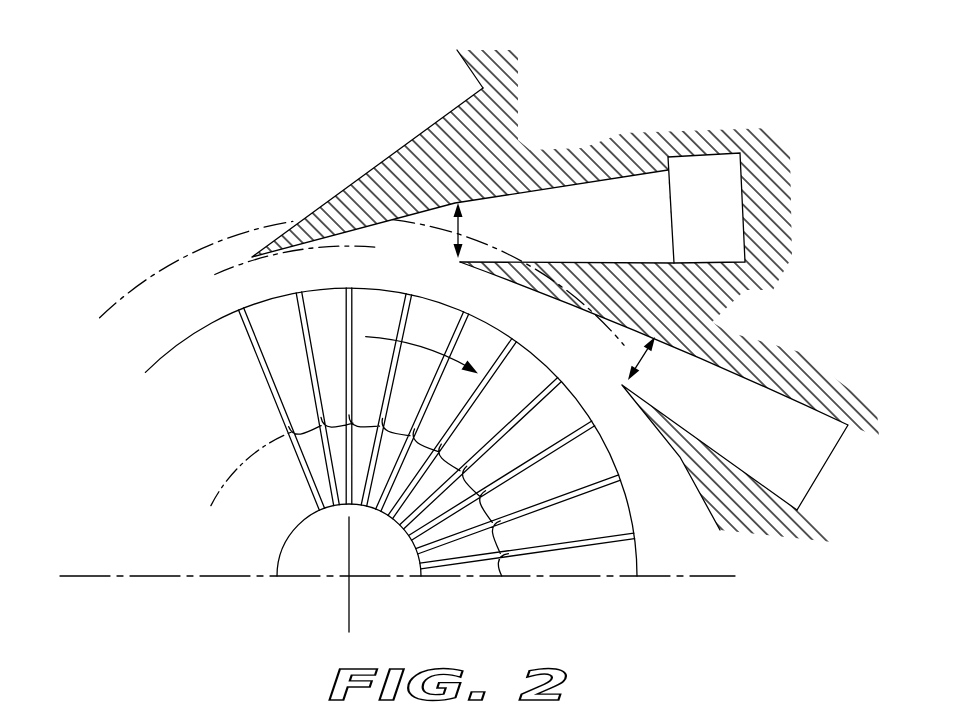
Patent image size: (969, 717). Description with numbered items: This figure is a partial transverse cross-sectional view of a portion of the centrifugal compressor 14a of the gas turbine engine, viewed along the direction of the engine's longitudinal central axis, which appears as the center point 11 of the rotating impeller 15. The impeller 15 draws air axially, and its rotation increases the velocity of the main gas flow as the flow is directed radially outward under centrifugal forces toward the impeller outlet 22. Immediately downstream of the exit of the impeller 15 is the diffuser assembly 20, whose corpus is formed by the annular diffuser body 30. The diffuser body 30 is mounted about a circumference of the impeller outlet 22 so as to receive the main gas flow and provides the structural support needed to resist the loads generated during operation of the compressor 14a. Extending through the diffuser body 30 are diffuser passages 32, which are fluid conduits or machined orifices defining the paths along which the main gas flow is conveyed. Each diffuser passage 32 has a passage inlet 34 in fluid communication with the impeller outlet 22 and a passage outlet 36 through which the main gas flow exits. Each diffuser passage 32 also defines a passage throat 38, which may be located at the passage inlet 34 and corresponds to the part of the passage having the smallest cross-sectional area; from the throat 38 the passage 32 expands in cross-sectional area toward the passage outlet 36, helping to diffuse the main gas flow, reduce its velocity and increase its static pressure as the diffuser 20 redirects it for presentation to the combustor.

The axis of rotation 11 is at (350, 578).
The centrifugal compressor 14a is at (85, 232).
The impeller 15 is at (532, 592).
The diffuser assembly 20 is at (572, 77).
The impeller outlet 22 is at (331, 279).
The annular diffuser body 30 is at (397, 167).
The diffuser passage 32 is at (448, 138).
The passage inlet 34 is at (410, 253).
The passage outlet 36 is at (427, 129).
The passage throat 38 is at (460, 228).